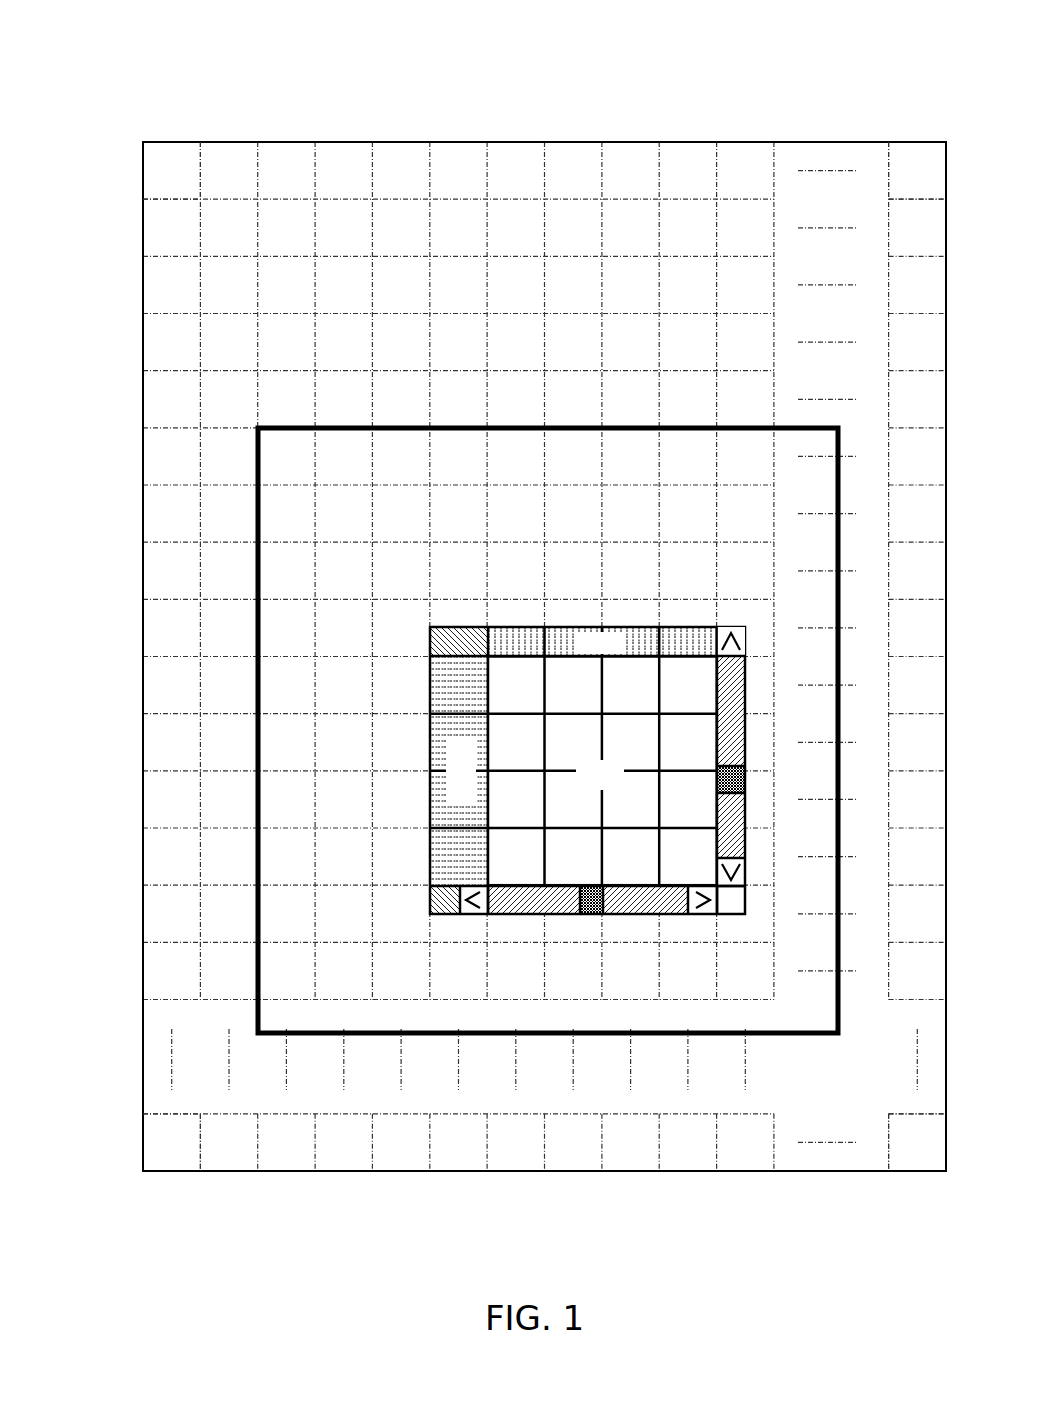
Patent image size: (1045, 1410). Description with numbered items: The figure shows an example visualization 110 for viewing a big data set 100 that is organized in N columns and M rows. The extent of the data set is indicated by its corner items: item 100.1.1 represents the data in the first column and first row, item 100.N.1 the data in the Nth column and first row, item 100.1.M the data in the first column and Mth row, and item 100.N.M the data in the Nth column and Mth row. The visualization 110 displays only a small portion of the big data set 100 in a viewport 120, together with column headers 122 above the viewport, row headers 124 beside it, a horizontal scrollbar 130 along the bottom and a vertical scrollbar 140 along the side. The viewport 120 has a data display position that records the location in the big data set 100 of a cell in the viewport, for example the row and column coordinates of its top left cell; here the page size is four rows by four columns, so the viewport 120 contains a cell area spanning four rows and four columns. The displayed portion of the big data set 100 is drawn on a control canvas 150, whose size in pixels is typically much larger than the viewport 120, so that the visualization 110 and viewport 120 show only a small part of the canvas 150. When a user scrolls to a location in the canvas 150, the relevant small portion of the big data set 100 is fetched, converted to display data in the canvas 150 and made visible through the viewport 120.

The big data set 100 is at (488, 612).
The item in first column and first row 100.1.1 is at (166, 163).
The item in Nth column and first row 100.N.1 is at (912, 163).
The item in first column and Mth row 100.1.M is at (173, 1162).
The item in Nth column and Mth row 100.N.M is at (920, 1162).
The visualization 110 is at (584, 764).
The viewport 120 is at (578, 787).
The column headers 122 is at (581, 652).
The row headers 124 is at (471, 792).
The horizontal scrollbar 130 is at (533, 912).
The vertical scrollbar 140 is at (733, 748).
The control canvas 150 is at (517, 422).